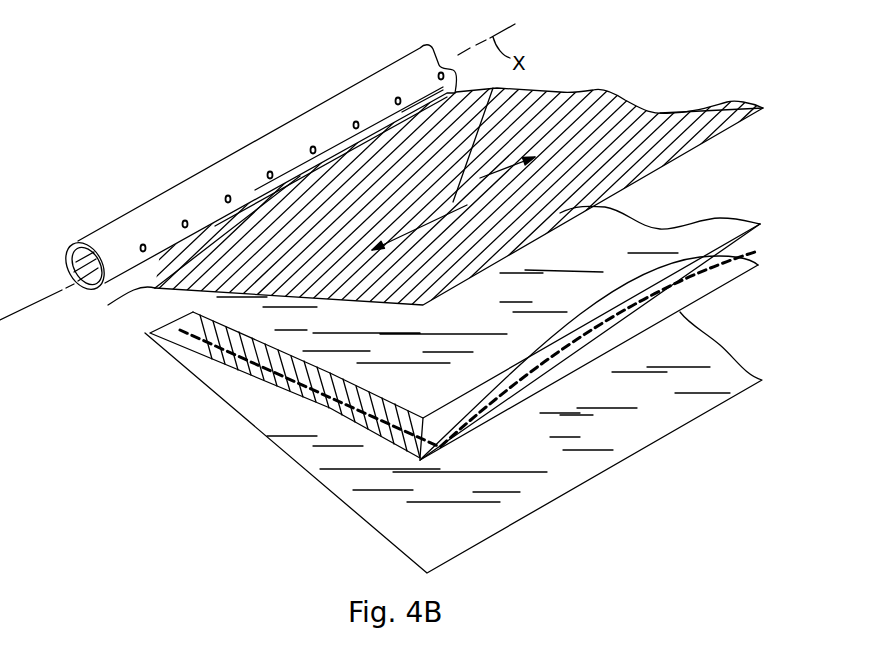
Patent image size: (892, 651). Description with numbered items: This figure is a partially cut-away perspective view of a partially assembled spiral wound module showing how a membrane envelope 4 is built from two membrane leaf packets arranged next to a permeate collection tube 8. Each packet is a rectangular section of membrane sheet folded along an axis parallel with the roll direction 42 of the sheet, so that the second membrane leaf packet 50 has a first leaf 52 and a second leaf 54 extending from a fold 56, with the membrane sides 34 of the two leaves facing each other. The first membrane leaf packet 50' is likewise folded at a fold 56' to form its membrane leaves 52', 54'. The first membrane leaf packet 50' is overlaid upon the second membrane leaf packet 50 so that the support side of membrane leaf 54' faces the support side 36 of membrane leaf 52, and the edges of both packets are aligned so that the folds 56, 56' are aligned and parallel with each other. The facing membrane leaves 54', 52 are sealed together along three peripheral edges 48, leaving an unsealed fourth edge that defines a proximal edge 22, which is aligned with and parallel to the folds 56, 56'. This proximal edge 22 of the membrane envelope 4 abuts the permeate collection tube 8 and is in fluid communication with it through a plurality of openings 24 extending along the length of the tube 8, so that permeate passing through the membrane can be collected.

The permeate collection tube 8 is at (197, 176).
The openings 24 is at (268, 172).
The support side 36 is at (607, 107).
The roll direction 42 is at (493, 88).
The membrane leaf 52' is at (707, 89).
The first membrane leaf packet 50' is at (744, 151).
The membrane side 34 is at (637, 237).
The membrane leaf 54' is at (488, 316).
The membrane envelope 4 is at (762, 210).
The first leaf 52 is at (491, 356).
The second leaf 54 is at (473, 413).
The fold 56' is at (99, 320).
The proximal edge 22 is at (128, 308).
The fold 56 is at (99, 361).
The peripheral edges 48 is at (225, 367).
The second membrane leaf packet 50 is at (253, 515).